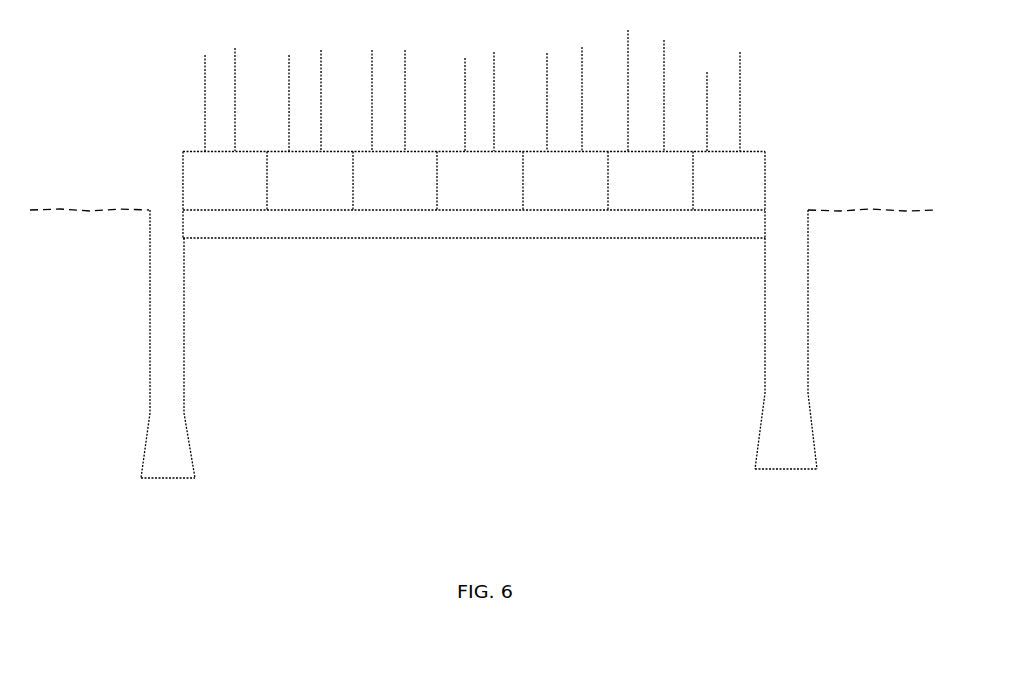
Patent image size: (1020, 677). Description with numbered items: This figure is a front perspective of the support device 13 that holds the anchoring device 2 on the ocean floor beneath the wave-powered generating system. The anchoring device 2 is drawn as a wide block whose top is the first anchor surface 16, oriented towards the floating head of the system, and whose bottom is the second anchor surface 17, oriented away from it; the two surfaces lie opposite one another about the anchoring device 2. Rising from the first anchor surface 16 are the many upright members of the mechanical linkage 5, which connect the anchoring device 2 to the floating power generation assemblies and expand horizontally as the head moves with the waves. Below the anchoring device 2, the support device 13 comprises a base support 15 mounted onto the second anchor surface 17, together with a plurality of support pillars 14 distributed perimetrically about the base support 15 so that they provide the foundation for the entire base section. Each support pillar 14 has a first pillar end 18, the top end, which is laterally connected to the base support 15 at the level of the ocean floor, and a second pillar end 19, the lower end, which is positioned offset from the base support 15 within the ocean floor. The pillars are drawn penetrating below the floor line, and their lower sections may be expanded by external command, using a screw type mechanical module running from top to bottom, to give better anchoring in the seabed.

The anchoring device 2 is at (497, 191).
The mechanical linkage 5 is at (213, 62).
The support device 13 is at (305, 301).
The support pillars 14 is at (162, 303).
The base support 15 is at (377, 233).
The first anchor surface 16 is at (752, 149).
The second anchor surface 17 is at (620, 213).
The first pillar end 18 is at (163, 206).
The second pillar end 19 is at (170, 482).